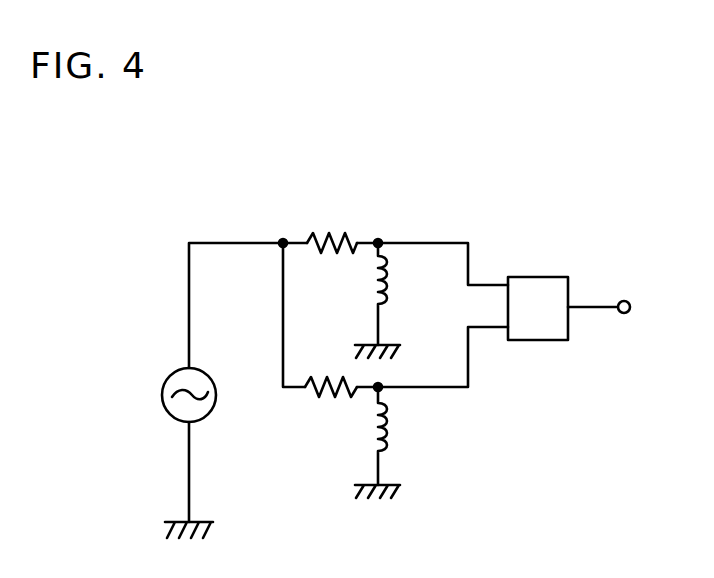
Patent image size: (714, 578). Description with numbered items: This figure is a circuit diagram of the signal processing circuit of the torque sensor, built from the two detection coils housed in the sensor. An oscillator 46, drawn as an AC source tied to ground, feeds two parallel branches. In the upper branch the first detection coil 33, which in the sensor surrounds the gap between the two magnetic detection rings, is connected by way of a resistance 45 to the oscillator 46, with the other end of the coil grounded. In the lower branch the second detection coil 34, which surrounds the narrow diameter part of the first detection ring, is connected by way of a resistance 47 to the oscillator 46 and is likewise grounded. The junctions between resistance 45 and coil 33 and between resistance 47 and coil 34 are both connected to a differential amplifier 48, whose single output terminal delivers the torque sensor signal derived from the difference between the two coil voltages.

The first detection coil 33 is at (378, 300).
The second detection coil 34 is at (378, 446).
The resistance 45 is at (352, 243).
The oscillator 46 is at (166, 384).
The resistance 47 is at (312, 389).
The differential amplifier 48 is at (540, 330).